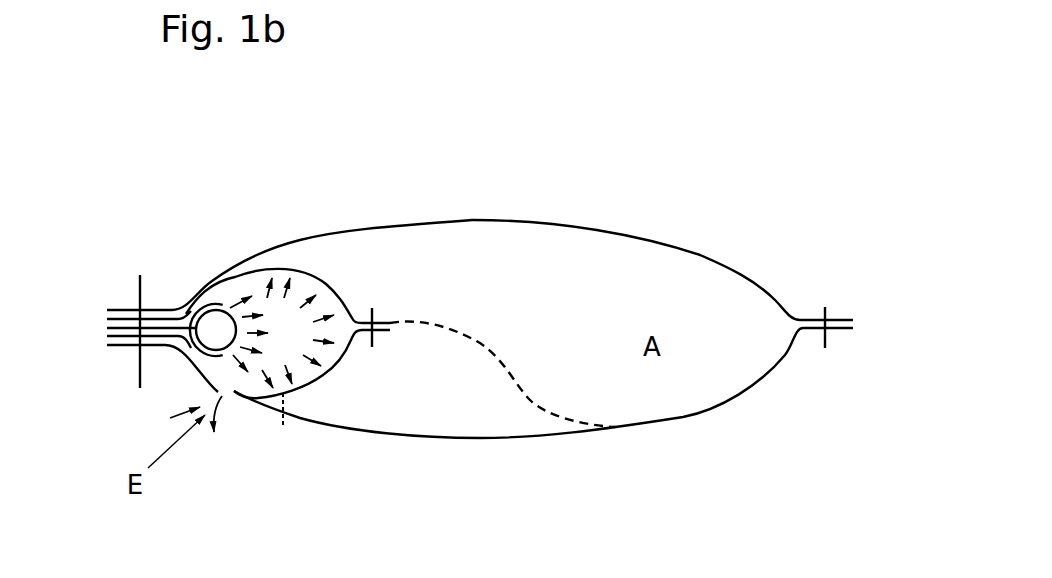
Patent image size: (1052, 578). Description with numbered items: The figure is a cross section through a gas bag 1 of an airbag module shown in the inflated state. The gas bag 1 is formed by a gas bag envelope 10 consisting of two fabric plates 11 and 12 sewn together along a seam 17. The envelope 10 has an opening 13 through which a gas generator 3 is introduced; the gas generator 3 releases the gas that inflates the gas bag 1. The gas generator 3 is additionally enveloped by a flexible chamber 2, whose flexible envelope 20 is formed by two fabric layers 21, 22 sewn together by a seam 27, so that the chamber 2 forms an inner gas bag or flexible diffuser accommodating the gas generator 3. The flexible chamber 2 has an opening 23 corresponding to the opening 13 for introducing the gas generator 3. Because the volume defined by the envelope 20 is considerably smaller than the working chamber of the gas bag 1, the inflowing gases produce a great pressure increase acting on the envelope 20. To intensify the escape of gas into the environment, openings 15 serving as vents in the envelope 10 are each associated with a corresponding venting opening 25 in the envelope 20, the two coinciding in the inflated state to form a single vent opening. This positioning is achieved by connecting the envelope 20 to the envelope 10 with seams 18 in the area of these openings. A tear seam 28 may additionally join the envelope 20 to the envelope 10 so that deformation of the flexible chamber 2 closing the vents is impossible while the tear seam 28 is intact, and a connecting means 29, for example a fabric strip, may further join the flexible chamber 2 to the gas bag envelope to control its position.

The gas bag 1 is at (500, 142).
The flexible chamber 2 is at (320, 333).
The gas generator 3 is at (215, 328).
The gas bag envelope 10 is at (761, 388).
The fabric plate 11 is at (737, 263).
The fabric plate 12 is at (683, 417).
The opening 13 is at (130, 308).
The opening 15 is at (213, 392).
The seam 17 is at (828, 335).
The seam 18 is at (277, 493).
The flexible envelope 20 is at (348, 366).
The fabric layer 21 is at (292, 270).
The fabric layer 22 is at (313, 387).
The opening 23 is at (122, 340).
The opening 25 is at (230, 394).
The seam 27 is at (375, 306).
The tear seam 28 is at (287, 403).
The connecting means 29 is at (535, 397).